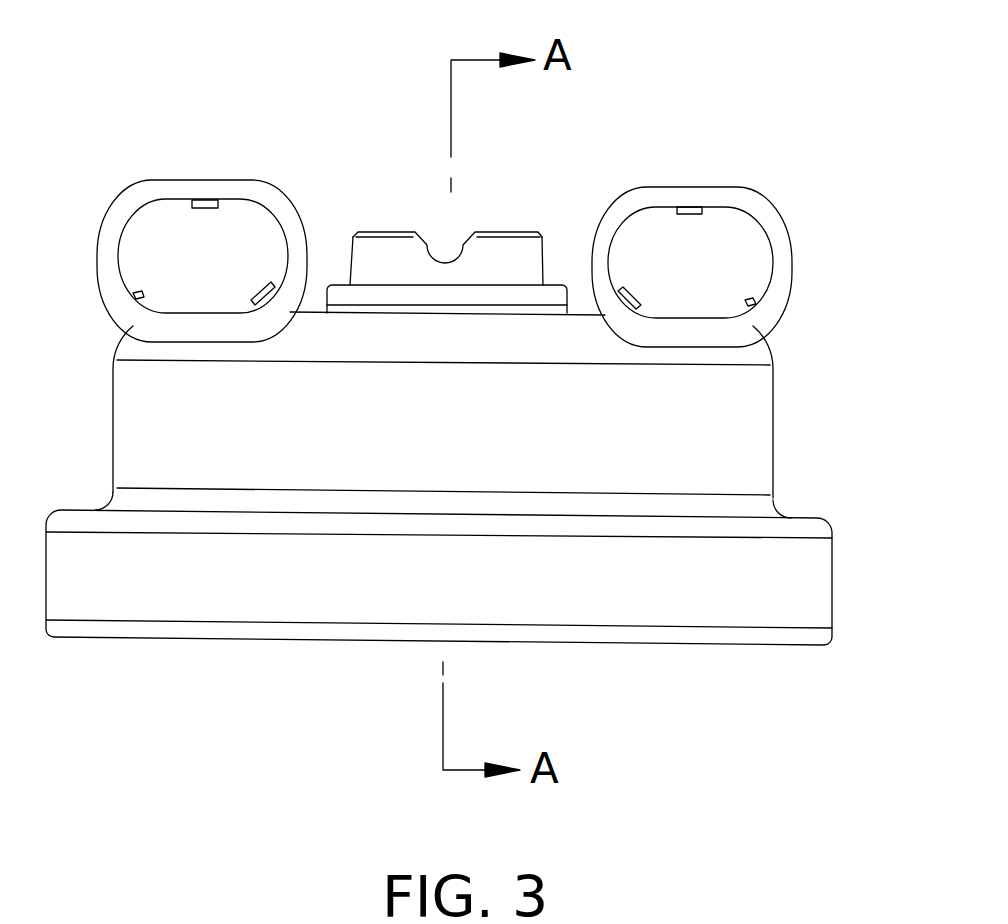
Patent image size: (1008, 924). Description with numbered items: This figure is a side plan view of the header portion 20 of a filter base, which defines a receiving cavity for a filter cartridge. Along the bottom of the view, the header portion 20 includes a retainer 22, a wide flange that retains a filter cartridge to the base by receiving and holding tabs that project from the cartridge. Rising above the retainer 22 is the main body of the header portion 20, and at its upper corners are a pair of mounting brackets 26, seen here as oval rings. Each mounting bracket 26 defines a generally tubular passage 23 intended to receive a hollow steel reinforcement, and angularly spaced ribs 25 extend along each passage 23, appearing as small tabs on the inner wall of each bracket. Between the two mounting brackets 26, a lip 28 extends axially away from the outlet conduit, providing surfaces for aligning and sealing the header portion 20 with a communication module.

The header portion 20 is at (808, 480).
The retainer 22 is at (832, 597).
The tubular passage 23 is at (247, 245).
The rib 25 is at (200, 200).
The mounting bracket 26 is at (108, 227).
The lip 28 is at (512, 232).